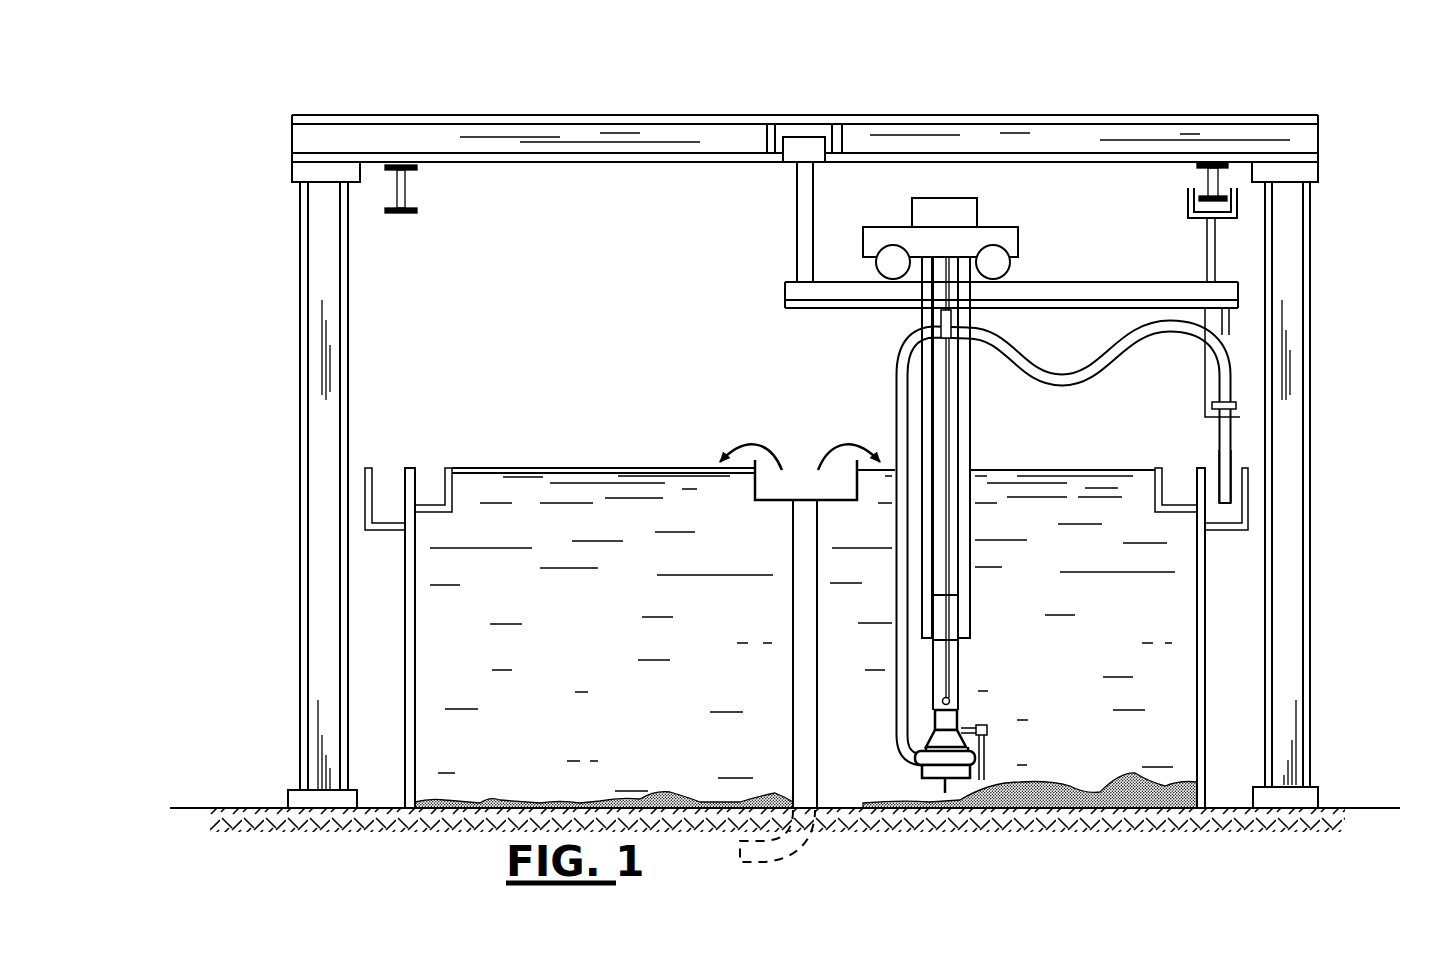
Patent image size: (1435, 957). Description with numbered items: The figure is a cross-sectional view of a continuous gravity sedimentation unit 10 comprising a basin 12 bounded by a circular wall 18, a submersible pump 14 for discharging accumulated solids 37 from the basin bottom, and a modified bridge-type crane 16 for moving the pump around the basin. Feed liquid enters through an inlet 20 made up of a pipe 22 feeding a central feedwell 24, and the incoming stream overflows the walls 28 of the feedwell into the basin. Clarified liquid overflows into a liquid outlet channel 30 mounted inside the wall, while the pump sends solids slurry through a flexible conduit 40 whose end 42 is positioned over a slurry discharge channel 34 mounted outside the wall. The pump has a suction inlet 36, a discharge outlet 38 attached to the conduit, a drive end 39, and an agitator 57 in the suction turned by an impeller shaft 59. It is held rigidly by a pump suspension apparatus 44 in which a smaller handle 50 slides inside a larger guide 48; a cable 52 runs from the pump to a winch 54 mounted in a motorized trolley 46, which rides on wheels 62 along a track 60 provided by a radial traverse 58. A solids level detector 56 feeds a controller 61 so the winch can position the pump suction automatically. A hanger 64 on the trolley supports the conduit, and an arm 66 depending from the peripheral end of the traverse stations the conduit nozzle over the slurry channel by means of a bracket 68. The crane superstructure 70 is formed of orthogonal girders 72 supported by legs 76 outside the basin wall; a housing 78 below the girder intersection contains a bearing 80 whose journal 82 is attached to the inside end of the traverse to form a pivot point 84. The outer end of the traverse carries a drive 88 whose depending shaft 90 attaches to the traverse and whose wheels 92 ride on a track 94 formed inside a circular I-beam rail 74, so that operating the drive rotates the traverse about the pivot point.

The continuous gravity sedimentation unit 10 is at (250, 688).
The basin 12 is at (645, 395).
The submersible pump 14 is at (961, 743).
The bridge-type crane 16 is at (1058, 100).
The circular wall 18 is at (809, 605).
The inlet 20 is at (778, 600).
The pipe 22 is at (792, 668).
The feedwell 24 is at (775, 500).
The feedwell walls 28 is at (750, 488).
The liquid outlet channel 30 is at (460, 478).
The slurry discharge channel 34 is at (365, 500).
The suction inlet 36 is at (922, 768).
The accumulated solids 37 is at (1115, 772).
The discharge outlet 38 is at (915, 758).
The drive end 39 is at (958, 700).
The flexible conduit 40 is at (1075, 385).
The conduit end 42 is at (1230, 505).
The pump suspension apparatus 44 is at (966, 410).
The motorized trolley 46 is at (908, 224).
The guide 48 is at (970, 460).
The handle 50 is at (958, 660).
The cable 52 is at (968, 635).
The winch 54 is at (965, 205).
The solids level detector 56 is at (990, 760).
The agitator 57 is at (940, 788).
The traverse 58 is at (870, 308).
The impeller shaft 59 is at (922, 777).
The track 60 is at (1038, 284).
The controller 61 is at (988, 730).
The trolley wheels 62 is at (880, 258).
The hanger 64 is at (955, 325).
The arm 66 is at (1226, 318).
The bracket 68 is at (1245, 400).
The superstructure 70 is at (476, 110).
The girders 72 is at (1320, 142).
The circular rail 74 is at (400, 214).
The legs 76 is at (300, 312).
The housing 78 is at (837, 128).
The bearing 80 is at (795, 137).
The journal 82 is at (797, 200).
The pivot point 84 is at (795, 315).
The drive 88 is at (1190, 210).
The depending shaft 90 is at (1208, 242).
The drive wheels 92 is at (1200, 195).
The rail track 94 is at (1310, 225).